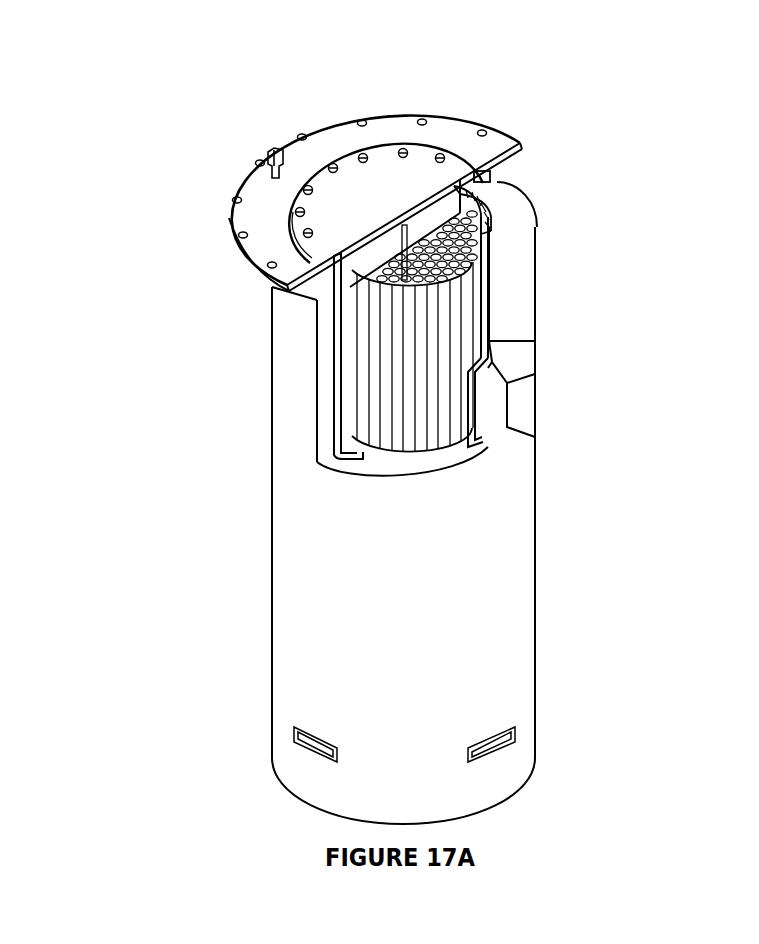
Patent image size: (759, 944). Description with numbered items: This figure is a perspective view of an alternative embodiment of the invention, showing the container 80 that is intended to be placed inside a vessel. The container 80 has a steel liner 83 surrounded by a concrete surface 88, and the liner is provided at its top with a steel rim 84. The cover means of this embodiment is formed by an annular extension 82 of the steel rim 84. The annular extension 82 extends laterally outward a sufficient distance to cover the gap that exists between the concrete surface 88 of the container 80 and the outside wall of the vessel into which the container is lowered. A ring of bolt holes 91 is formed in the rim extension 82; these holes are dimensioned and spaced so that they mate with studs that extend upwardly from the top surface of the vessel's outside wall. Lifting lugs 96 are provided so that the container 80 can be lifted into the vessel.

The container 80 is at (542, 581).
The bolt holes 91 is at (227, 205).
The annular extension 82 is at (488, 140).
The lifting lugs 96 is at (262, 152).
The steel rim 84 is at (497, 173).
The concrete surface 88 is at (497, 427).
The steel liner 83 is at (487, 358).